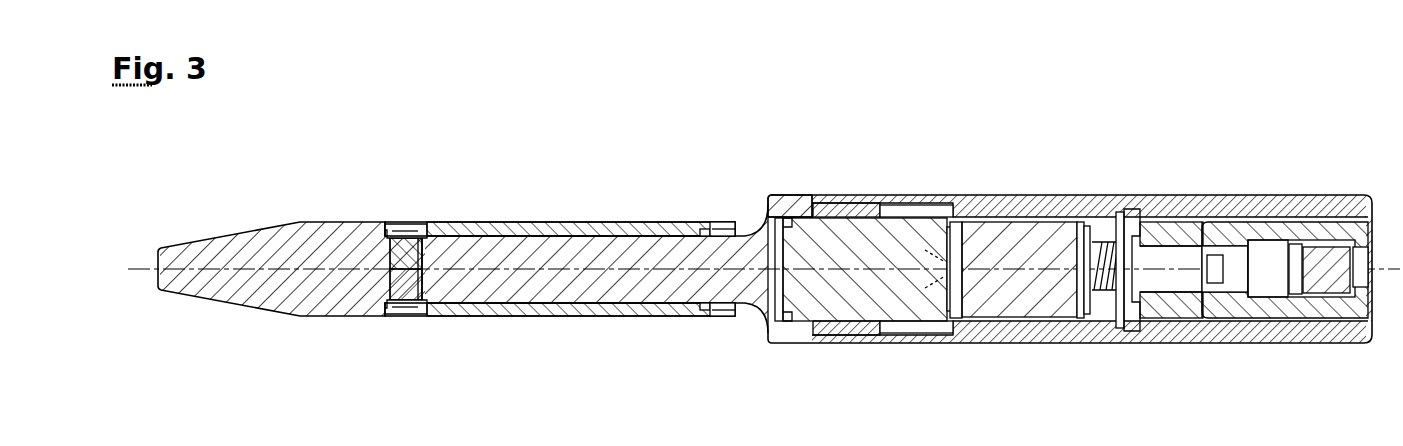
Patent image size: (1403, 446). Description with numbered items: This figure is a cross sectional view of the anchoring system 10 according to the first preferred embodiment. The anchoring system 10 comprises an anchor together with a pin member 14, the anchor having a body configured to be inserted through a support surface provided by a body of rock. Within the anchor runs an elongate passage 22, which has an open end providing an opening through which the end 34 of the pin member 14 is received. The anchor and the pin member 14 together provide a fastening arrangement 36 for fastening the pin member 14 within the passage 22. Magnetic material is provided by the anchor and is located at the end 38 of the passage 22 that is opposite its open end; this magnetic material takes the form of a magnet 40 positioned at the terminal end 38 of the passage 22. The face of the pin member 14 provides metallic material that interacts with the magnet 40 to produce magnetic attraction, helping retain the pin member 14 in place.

The anchoring system 10 is at (320, 133).
The pin member 14 is at (606, 300).
The elongate passage 22 is at (654, 194).
The end of the pin member 34 is at (716, 342).
The fastening arrangement 36 is at (465, 174).
The end of the passage 38 is at (403, 342).
The magnet 40 is at (407, 250).